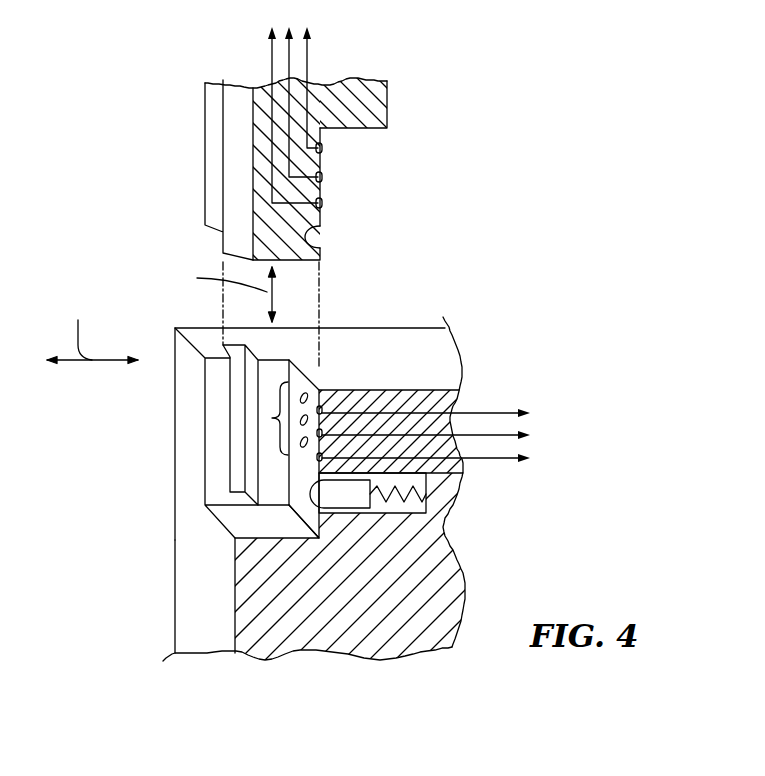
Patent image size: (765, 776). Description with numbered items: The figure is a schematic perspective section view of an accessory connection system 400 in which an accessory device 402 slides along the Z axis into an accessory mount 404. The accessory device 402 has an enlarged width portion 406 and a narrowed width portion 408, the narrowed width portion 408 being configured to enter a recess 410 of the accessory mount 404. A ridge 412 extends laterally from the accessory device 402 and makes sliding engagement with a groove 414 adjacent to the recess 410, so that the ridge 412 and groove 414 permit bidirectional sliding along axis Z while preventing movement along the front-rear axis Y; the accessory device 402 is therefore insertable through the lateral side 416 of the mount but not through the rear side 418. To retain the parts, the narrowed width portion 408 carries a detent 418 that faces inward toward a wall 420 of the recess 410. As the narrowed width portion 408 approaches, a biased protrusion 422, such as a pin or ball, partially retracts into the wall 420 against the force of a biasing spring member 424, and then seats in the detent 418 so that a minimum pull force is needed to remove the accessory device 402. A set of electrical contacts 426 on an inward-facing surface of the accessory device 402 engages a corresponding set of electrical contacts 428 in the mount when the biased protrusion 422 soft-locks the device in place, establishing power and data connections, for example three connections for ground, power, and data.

The accessory connection system 400 is at (105, 263).
The accessory device 402 is at (197, 128).
The accessory mount 404 is at (170, 593).
The enlarged width portion 406 is at (388, 112).
The narrowed width portion 408 is at (397, 127).
The recess 410 is at (230, 518).
The ridge 412 is at (205, 183).
The groove 414 is at (237, 476).
The lateral side 416 is at (410, 337).
The detent 418 is at (325, 239).
The wall of the recess 420 is at (297, 377).
The biased protrusion 422 is at (335, 500).
The biasing spring member 424 is at (425, 507).
The electrical contacts of the accessory device 426 is at (325, 138).
The electrical contacts of the accessory mount 428 is at (272, 418).